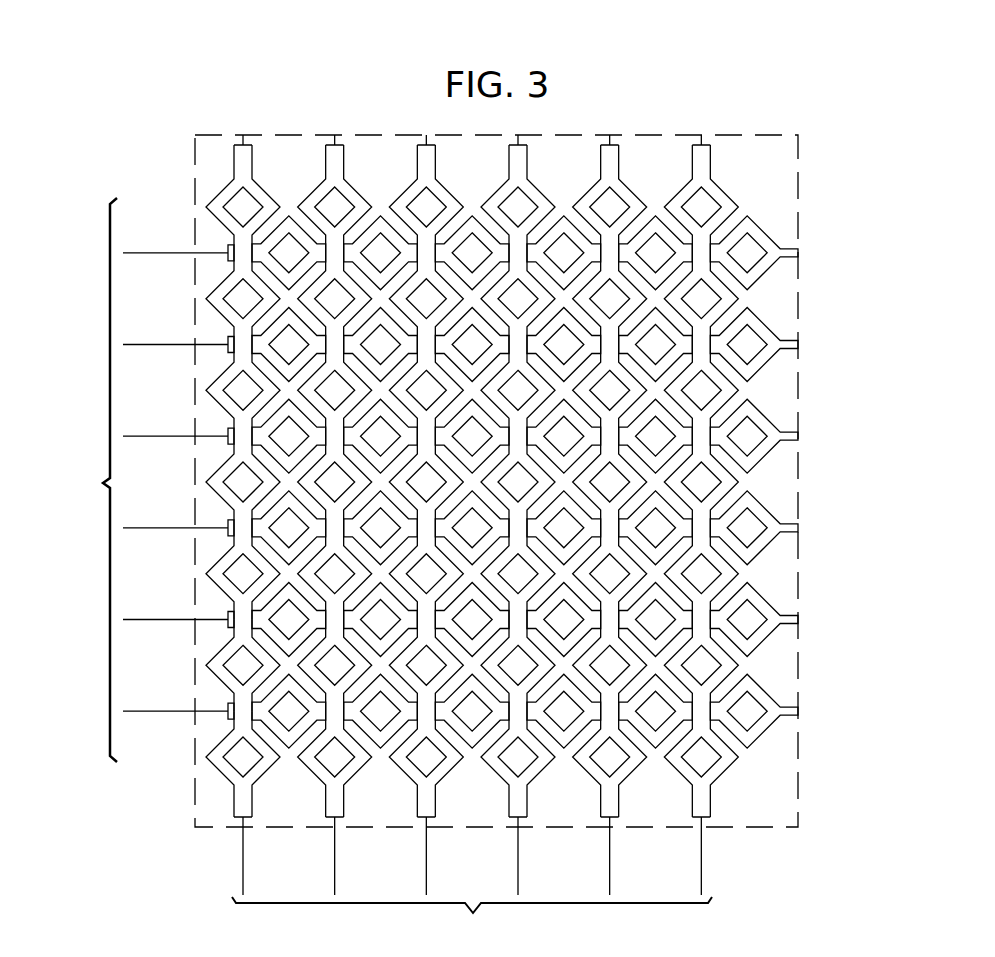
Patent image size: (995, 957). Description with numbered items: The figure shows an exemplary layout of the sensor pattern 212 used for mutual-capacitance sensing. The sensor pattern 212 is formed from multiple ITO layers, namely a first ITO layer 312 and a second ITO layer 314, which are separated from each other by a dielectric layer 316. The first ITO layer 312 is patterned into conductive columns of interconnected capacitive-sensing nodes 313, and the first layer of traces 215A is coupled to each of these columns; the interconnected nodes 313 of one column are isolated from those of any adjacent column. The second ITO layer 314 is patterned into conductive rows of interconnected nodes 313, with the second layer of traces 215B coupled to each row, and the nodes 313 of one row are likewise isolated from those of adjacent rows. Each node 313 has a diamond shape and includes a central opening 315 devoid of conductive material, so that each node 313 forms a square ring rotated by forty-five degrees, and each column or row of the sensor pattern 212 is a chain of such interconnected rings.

The sensor pattern 212 is at (275, 69).
The first ITO layer 312 is at (641, 769).
The capacitive-sensing node 313 is at (230, 678).
The second ITO layer 314 is at (770, 732).
The central opening 315 is at (240, 660).
The dielectric layer 316 is at (762, 798).
The first layer of traces 215A is at (472, 923).
The second layer of traces 215B is at (74, 480).